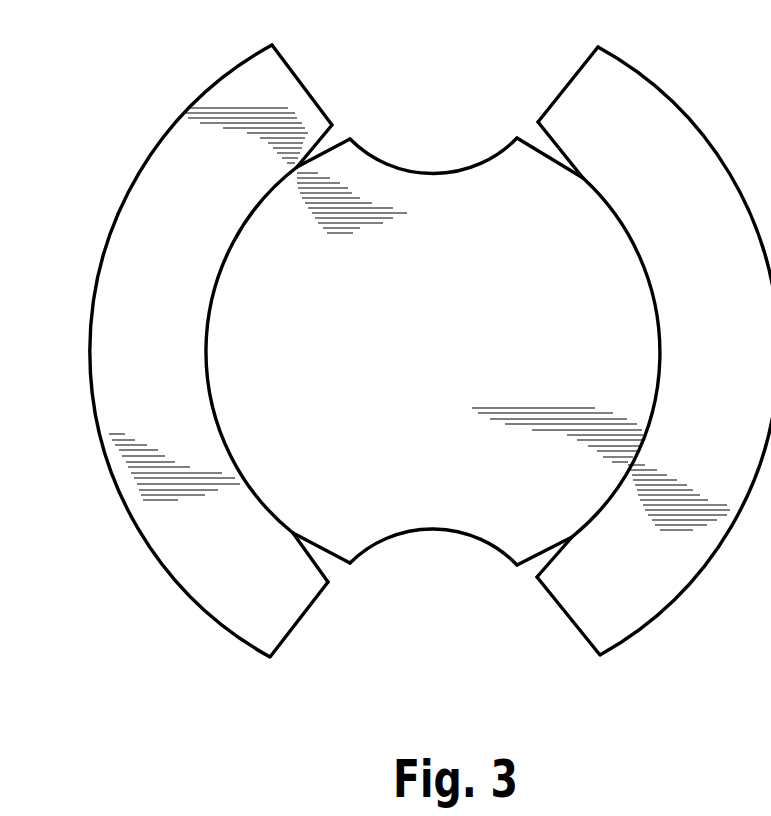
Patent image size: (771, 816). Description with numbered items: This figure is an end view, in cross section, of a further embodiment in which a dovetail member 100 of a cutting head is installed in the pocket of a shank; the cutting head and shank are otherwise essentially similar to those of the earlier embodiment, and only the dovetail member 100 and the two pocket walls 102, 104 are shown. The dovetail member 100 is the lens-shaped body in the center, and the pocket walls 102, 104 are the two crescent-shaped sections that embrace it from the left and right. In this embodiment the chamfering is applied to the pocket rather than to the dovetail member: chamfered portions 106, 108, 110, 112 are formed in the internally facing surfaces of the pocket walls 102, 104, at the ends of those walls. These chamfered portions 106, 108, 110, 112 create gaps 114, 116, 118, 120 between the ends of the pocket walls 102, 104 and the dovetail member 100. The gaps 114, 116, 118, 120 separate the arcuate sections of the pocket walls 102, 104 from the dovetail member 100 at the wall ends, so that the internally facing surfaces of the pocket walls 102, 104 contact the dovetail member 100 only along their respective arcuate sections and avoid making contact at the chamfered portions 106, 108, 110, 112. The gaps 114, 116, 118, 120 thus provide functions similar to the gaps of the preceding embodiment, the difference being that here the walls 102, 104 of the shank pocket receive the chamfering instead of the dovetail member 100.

The dovetail member 100 is at (394, 382).
The pocket wall 102 is at (216, 351).
The pocket wall 104 is at (616, 351).
The chamfered portion 106 is at (331, 125).
The chamfered portion 108 is at (556, 142).
The chamfered portion 110 is at (537, 577).
The chamfered portion 112 is at (340, 558).
The gap 114 is at (342, 132).
The gap 116 is at (528, 125).
The gap 118 is at (527, 571).
The gap 120 is at (353, 578).